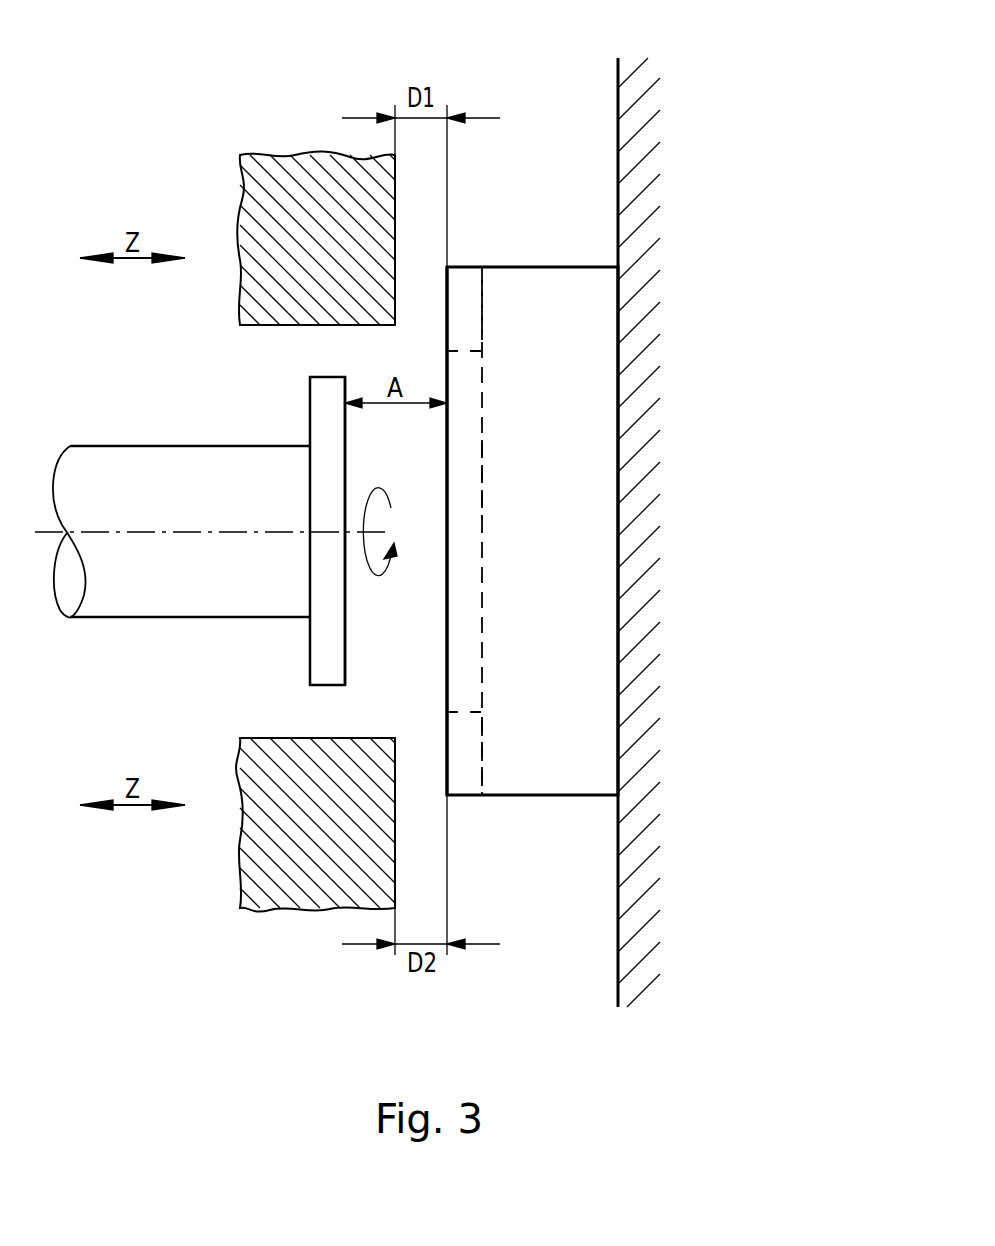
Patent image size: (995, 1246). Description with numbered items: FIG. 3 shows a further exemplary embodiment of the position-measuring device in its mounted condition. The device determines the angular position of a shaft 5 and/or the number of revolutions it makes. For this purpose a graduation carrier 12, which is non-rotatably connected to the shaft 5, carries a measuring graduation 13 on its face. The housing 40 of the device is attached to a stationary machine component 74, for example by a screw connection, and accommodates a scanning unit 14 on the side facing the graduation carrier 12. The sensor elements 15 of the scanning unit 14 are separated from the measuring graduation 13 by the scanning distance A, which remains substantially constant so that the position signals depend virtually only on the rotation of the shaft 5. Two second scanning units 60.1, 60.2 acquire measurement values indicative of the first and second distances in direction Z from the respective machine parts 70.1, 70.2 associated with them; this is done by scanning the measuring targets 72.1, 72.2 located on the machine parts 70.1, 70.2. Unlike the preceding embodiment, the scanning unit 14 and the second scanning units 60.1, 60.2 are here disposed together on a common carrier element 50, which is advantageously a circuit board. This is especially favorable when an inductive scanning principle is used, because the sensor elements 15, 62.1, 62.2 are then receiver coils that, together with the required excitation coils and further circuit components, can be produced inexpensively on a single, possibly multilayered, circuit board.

The shaft 5 is at (118, 617).
The graduation carrier 12 is at (310, 667).
The measuring graduation 13 is at (345, 658).
The scanning unit 14 is at (482, 573).
The sensor elements 15 is at (447, 593).
The housing 40 is at (585, 267).
The carrier element 50 is at (470, 485).
The second scanning unit 60.1 is at (482, 312).
The second scanning unit 60.2 is at (482, 752).
The sensor element 62.1 is at (447, 287).
The sensor element 62.2 is at (447, 780).
The machine part 70.1 is at (270, 163).
The machine part 70.2 is at (267, 898).
The measuring target 72.1 is at (395, 255).
The measuring target 72.2 is at (395, 810).
The stationary machine component 74 is at (618, 100).